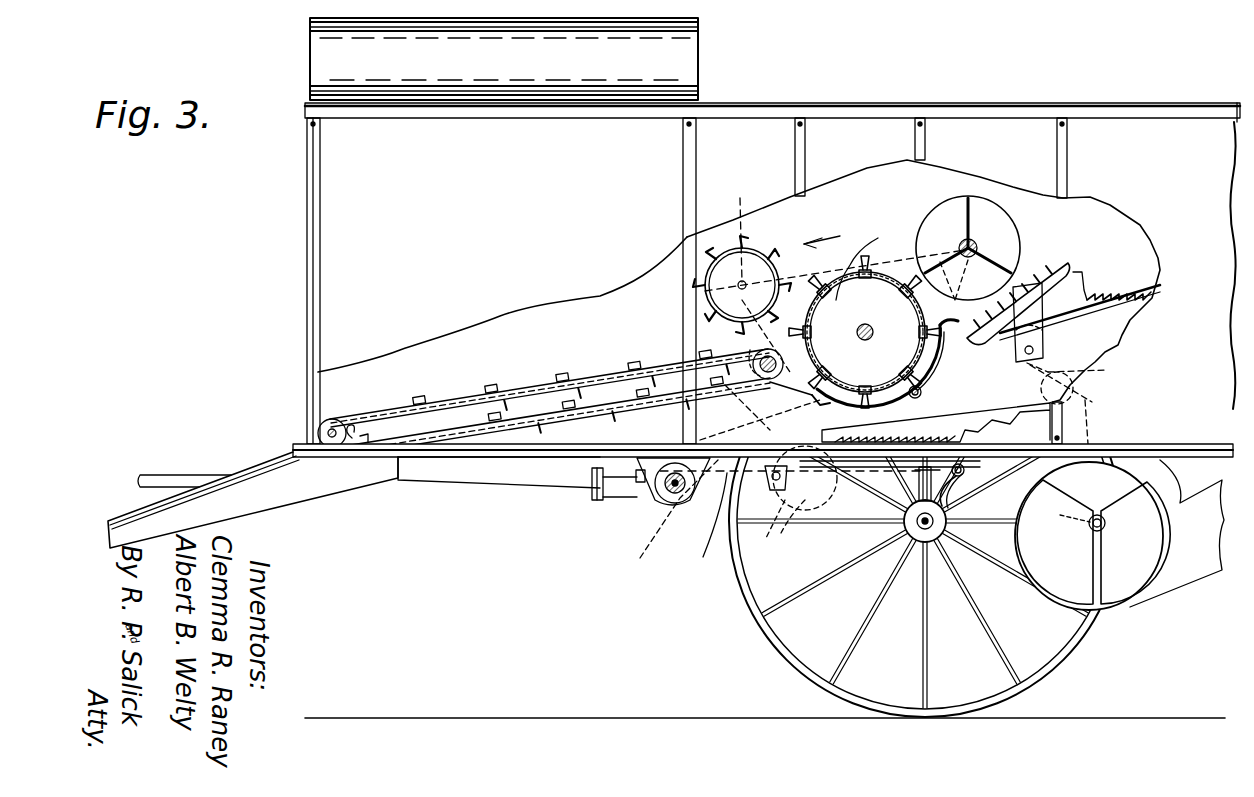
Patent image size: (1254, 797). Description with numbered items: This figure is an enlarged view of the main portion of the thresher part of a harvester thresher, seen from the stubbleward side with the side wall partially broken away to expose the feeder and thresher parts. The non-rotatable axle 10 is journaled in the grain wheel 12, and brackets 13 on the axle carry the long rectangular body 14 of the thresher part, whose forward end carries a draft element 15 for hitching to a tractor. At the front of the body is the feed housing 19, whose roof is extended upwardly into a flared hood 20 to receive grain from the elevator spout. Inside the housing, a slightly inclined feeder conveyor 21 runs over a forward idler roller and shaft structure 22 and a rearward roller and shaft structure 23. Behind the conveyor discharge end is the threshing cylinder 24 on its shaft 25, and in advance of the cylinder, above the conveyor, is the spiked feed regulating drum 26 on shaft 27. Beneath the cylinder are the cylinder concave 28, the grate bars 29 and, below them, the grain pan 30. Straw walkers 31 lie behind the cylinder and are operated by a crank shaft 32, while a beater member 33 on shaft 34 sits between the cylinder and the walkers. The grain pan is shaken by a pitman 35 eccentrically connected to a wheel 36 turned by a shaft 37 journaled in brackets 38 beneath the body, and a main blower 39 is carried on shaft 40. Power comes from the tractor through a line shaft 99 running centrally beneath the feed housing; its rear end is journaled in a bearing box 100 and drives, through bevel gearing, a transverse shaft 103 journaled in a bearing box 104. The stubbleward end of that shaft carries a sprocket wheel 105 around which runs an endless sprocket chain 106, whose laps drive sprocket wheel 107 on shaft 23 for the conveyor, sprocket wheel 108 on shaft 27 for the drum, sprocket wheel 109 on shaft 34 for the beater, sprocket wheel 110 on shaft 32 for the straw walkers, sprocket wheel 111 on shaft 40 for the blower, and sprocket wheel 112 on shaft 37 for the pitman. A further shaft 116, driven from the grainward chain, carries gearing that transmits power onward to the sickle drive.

The axle 10 is at (920, 542).
The grain wheel 12 is at (772, 622).
The brackets 13 is at (917, 476).
The body 14 is at (1040, 104).
The draft element 15 is at (262, 497).
The feed housing 19 is at (333, 278).
The flared hood 20 is at (682, 63).
The feeder conveyor 21 is at (520, 382).
The idler roller and shaft structure 22 is at (340, 427).
The roller and shaft structure 23 is at (756, 354).
The threshing cylinder 24 is at (865, 256).
The shaft 25 is at (862, 325).
The spiked feed regulating drum 26 is at (752, 263).
The shaft 27 is at (735, 293).
The cylinder concave 28 is at (905, 406).
The grate bars 29 is at (942, 362).
The grain pan 30 is at (925, 433).
The straw walkers 31 is at (1090, 288).
The crank shaft 32 is at (1040, 347).
The beater member 33 is at (1003, 238).
The shaft 34 is at (978, 249).
The pitman 35 is at (806, 478).
The wheel 36 is at (790, 520).
The shaft 37 is at (771, 492).
The brackets 38 is at (745, 485).
The main blower 39 is at (1125, 565).
The shaft 40 is at (1103, 528).
The line shaft 99 is at (487, 484).
The bearing box 100 is at (622, 490).
The transverse shaft 103 is at (648, 476).
The bearing box 104 is at (752, 470).
The sprocket wheel 105 is at (646, 514).
The endless sprocket chain 106 is at (812, 404).
The sprocket wheel 107 is at (742, 405).
The sprocket wheel 108 is at (734, 228).
The sprocket wheel 109 is at (963, 281).
The sprocket wheel 110 is at (1080, 358).
The sprocket wheel 111 is at (1069, 516).
The sprocket wheel 112 is at (805, 502).
The shaft 116 is at (960, 480).